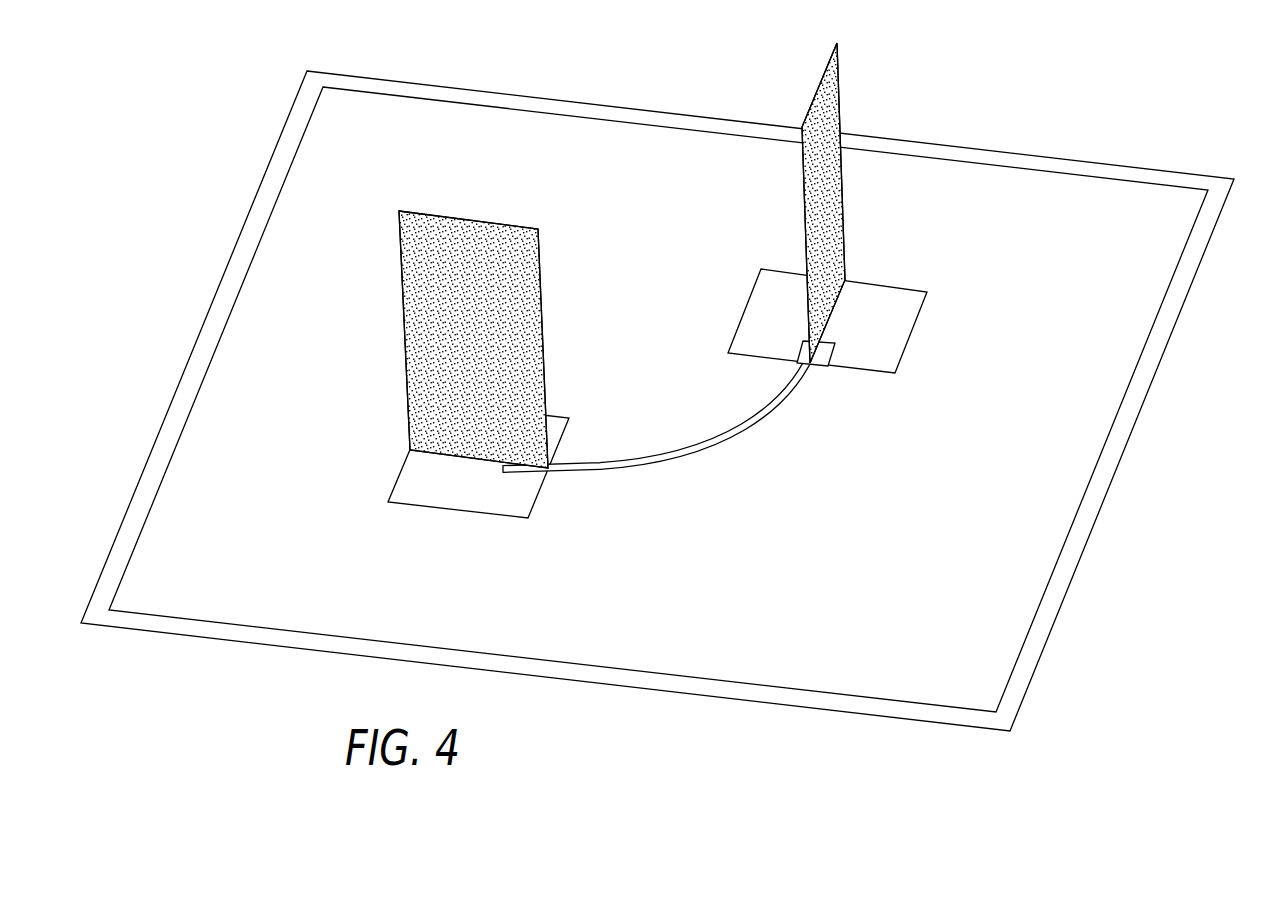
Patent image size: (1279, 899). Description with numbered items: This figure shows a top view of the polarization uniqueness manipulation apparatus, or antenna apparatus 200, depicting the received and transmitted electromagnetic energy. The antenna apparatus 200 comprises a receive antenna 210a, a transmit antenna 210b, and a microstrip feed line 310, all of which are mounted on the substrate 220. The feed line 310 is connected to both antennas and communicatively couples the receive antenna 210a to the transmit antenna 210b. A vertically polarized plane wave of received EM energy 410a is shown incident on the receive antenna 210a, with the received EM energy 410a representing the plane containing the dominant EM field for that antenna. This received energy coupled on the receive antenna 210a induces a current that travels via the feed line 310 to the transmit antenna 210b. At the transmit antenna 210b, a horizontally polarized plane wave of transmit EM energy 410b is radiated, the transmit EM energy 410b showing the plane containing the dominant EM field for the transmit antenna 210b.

The antenna apparatus 200 is at (669, 386).
The substrate 220 is at (901, 523).
The receive antenna 210a is at (913, 327).
The transmit antenna 210b is at (413, 502).
The microstrip feed line 310 is at (700, 455).
The received EM energy 410a is at (826, 203).
The transmit EM energy 410b is at (428, 335).